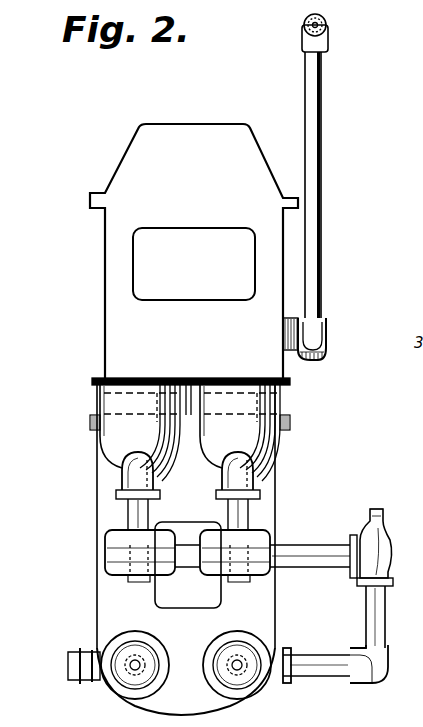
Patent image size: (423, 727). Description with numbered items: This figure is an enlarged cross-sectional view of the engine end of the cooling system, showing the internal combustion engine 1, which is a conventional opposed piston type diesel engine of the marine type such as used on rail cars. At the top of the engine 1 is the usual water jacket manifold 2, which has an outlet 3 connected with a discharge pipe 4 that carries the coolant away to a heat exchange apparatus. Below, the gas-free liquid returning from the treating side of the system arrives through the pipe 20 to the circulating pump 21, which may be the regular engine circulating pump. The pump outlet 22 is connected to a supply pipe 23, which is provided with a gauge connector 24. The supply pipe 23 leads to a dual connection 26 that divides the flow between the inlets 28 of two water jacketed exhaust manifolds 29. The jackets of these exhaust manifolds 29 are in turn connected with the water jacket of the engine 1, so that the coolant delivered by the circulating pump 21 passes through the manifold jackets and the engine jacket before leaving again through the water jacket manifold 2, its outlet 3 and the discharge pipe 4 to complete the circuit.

The internal combustion engine 1 is at (212, 138).
The water jacket manifold 2 is at (326, 346).
The outlet 3 is at (322, 326).
The discharge pipe 4 is at (328, 25).
The pipe 20 is at (228, 670).
The circulating pump 21 is at (247, 686).
The pump outlet 22 is at (298, 656).
The supply pipe 23 is at (313, 548).
The gauge connector 24 is at (385, 518).
The dual connection 26 is at (188, 570).
The inlets 28 is at (231, 479).
The water jacketed exhaust manifolds 29 is at (103, 453).